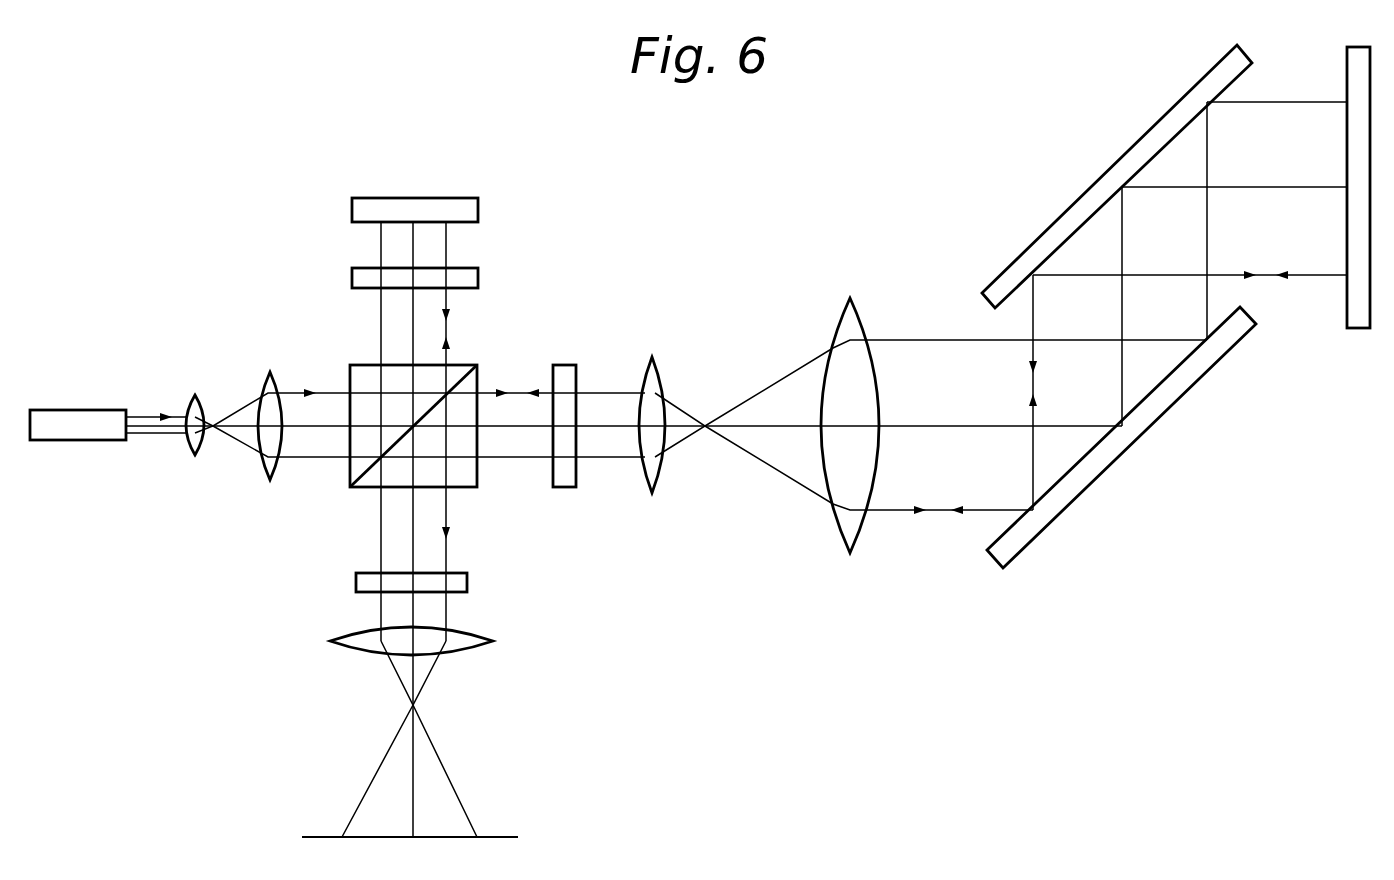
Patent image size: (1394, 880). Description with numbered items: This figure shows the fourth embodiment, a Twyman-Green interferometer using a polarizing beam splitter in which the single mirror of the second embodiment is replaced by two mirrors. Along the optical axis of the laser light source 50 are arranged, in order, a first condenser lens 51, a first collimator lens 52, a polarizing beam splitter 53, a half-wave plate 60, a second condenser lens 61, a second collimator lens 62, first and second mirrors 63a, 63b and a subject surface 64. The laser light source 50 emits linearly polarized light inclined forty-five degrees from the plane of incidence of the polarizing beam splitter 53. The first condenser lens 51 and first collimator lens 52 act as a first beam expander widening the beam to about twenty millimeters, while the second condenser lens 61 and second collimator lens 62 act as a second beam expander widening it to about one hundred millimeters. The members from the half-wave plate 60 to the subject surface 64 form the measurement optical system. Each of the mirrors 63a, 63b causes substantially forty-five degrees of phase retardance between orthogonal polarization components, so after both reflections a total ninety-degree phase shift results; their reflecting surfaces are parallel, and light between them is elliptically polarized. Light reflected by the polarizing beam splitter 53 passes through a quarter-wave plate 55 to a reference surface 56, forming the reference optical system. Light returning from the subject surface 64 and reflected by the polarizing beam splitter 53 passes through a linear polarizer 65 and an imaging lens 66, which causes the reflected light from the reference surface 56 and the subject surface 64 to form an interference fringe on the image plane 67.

The laser light source 50 is at (78, 432).
The first condenser lens 51 is at (195, 450).
The first collimator lens 52 is at (268, 467).
The polarizing beam splitter 53 is at (360, 477).
The quarter-wave plate 55 is at (473, 280).
The reference surface 56 is at (473, 212).
The half-wave plate 60 is at (566, 486).
The second condenser lens 61 is at (652, 493).
The second collimator lens 62 is at (850, 551).
The first mirror 63a is at (990, 548).
The second mirror 63b is at (1003, 302).
The subject surface 64 is at (1345, 310).
The linear polarizer 65 is at (462, 582).
The imaging lens 66 is at (488, 641).
The image plane 67 is at (512, 838).